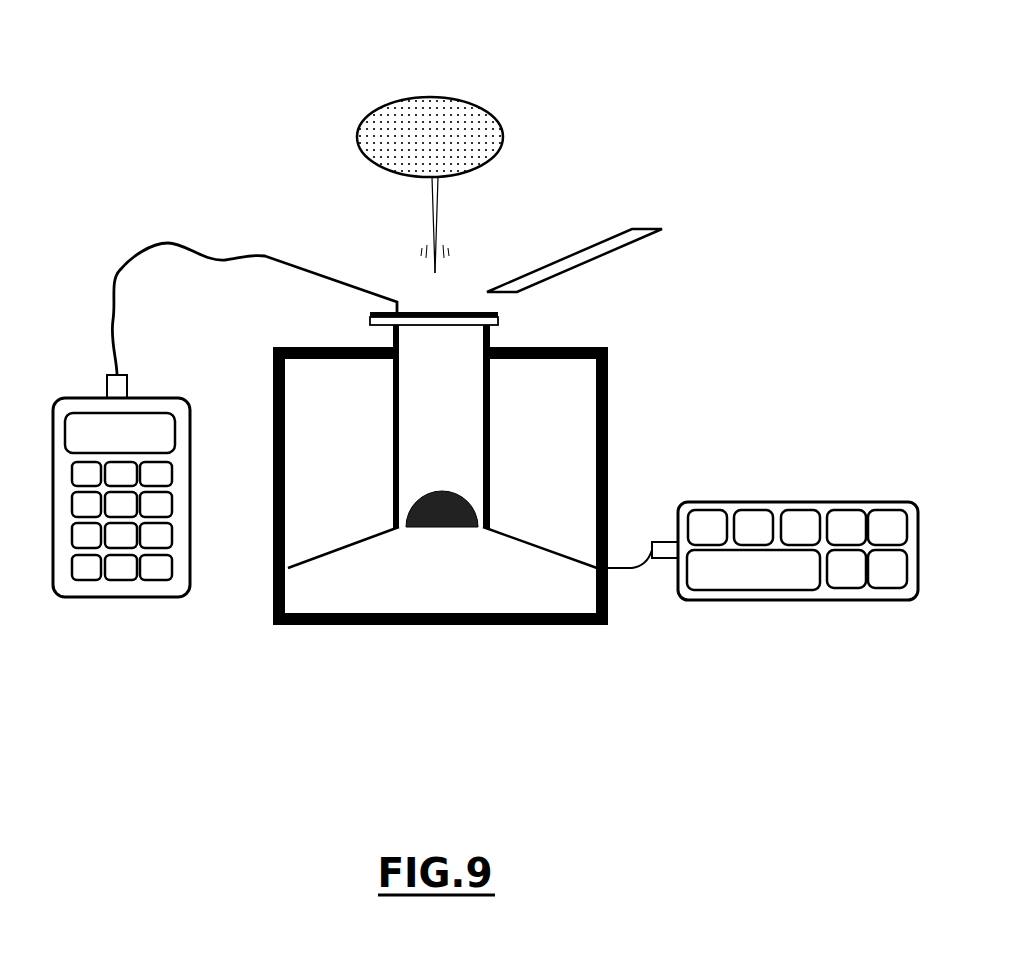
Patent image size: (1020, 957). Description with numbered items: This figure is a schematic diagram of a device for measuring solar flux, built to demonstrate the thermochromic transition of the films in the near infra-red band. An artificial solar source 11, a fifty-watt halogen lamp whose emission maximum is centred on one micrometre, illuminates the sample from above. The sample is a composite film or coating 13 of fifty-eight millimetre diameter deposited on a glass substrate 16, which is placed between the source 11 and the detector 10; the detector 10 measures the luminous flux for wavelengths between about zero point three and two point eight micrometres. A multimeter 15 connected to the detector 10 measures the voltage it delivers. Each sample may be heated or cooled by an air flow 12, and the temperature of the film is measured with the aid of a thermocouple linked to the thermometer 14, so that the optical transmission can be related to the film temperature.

The detector 10 is at (410, 623).
The artificial solar source 11 is at (440, 95).
The air flow 12 is at (617, 248).
The composite films or coatings 13 is at (365, 313).
The thermometer 14 is at (113, 598).
The multimeter 15 is at (720, 503).
The glass substrate 16 is at (505, 320).